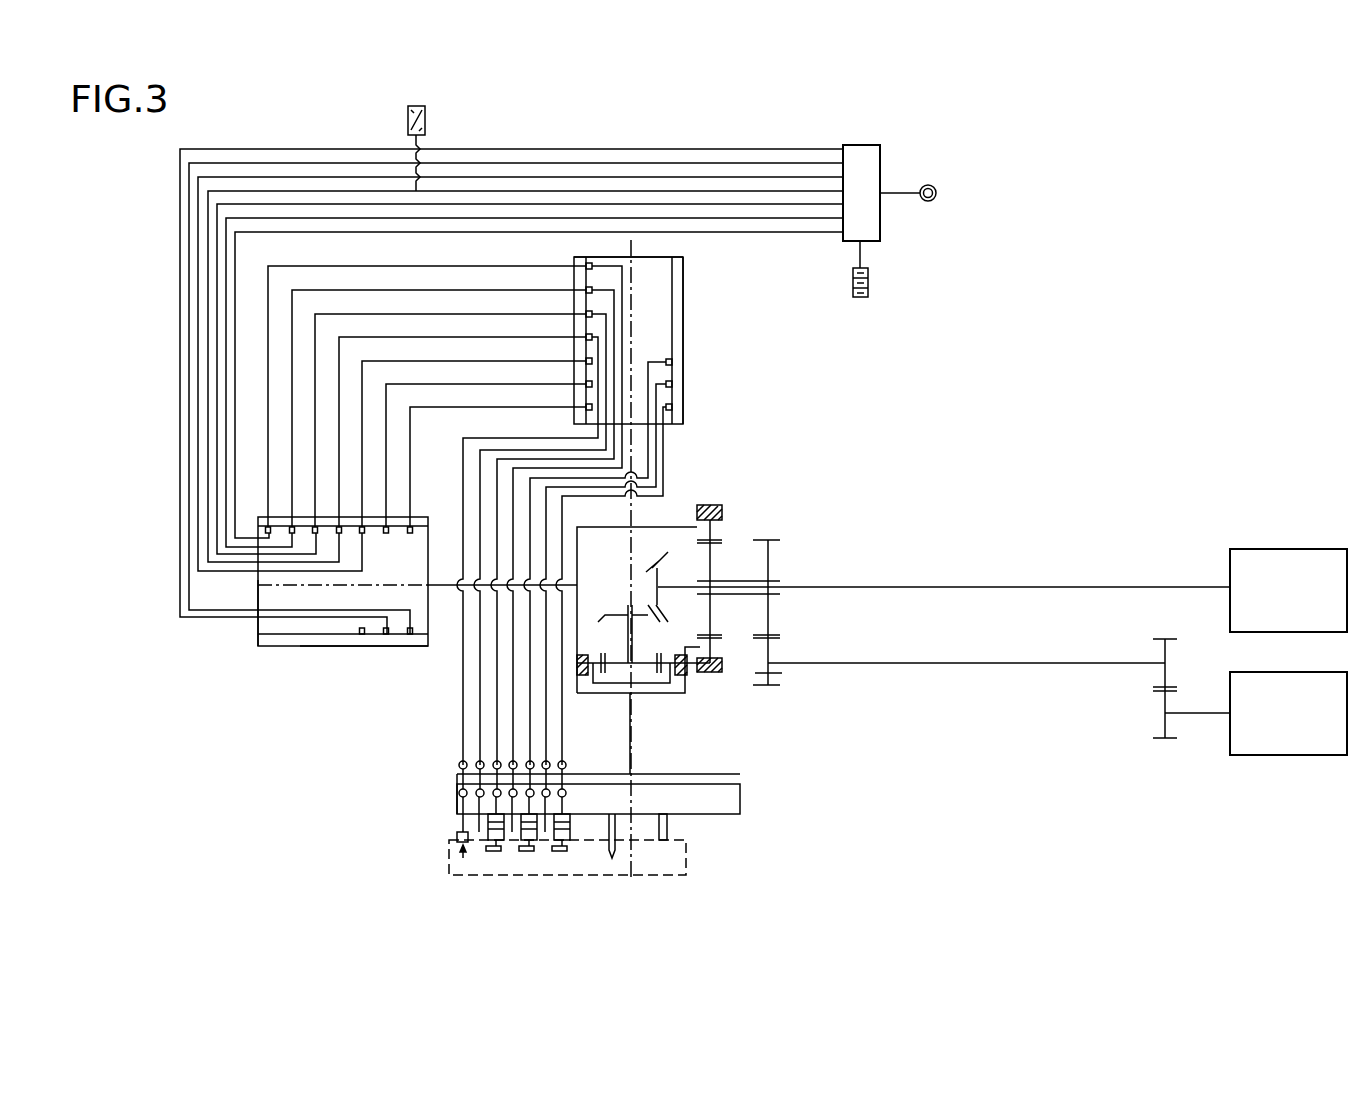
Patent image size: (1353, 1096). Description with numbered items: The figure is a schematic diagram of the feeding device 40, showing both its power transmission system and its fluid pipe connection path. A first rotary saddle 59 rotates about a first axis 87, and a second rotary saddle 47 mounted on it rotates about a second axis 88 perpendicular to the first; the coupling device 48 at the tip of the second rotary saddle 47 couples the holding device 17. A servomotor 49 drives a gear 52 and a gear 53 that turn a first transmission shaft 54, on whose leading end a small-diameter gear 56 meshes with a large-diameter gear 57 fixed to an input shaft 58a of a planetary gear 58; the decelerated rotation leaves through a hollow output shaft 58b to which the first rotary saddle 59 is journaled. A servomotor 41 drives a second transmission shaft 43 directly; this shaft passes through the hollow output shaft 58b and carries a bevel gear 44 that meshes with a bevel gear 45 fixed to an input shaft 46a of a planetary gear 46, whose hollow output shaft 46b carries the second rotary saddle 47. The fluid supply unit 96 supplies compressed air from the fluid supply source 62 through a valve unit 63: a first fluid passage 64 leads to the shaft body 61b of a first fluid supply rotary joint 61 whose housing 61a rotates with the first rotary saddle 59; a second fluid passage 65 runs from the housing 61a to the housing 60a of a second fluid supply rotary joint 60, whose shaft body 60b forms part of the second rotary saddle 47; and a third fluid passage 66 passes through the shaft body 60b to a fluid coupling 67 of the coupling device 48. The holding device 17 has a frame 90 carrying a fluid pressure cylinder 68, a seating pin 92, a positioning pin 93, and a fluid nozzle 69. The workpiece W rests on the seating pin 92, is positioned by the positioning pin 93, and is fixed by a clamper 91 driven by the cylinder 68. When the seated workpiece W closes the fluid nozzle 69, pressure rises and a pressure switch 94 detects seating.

The pressure switch 94 is at (425, 119).
The first fluid passage 64 is at (672, 149).
The valve unit 63 is at (880, 166).
The fluid supply source 62 is at (937, 193).
The fluid supply unit 96 is at (1032, 184).
The feeding device 40 is at (1296, 214).
The second fluid passage 65 is at (437, 266).
The second axis 88 is at (632, 243).
The second fluid supply rotary joint 60 is at (770, 255).
The housing 60a is at (683, 295).
The shaft body 60b is at (653, 257).
The third fluid passage 66 is at (556, 438).
The output shaft 58b is at (705, 527).
The first rotary saddle 59 is at (736, 558).
The planetary gear 58 is at (730, 508).
The input shaft 58a is at (725, 578).
The large-diameter gear 57 is at (770, 568).
The second transmission shaft 43 is at (957, 588).
The servomotor 41 is at (1262, 549).
The bevel gear 45 is at (618, 612).
The bevel gear 44 is at (655, 568).
The planetary gear 46 is at (683, 680).
The input shaft 46a is at (628, 645).
The hollow output shaft 46b is at (634, 740).
The small-diameter gear 56 is at (770, 675).
The first transmission shaft 54 is at (945, 664).
The gear 53 is at (1150, 675).
The gear 52 is at (1150, 728).
The servomotor 49 is at (1280, 755).
The first fluid supply rotary joint 61 is at (338, 745).
The housing 61a is at (308, 646).
The shaft body 61b is at (258, 632).
The first axis 87 is at (253, 580).
The fluid coupling 67 is at (455, 770).
The holding device 17 is at (447, 796).
The fluid pressure cylinder 68 is at (470, 826).
The fluid nozzle 69 is at (452, 836).
The workpiece W is at (449, 860).
The clamper 91 is at (494, 851).
The seating pin 92 is at (670, 832).
The positioning pin 93 is at (620, 853).
The second rotary saddle 47 is at (720, 774).
The coupling device 48 is at (754, 790).
The frame 90 is at (742, 800).